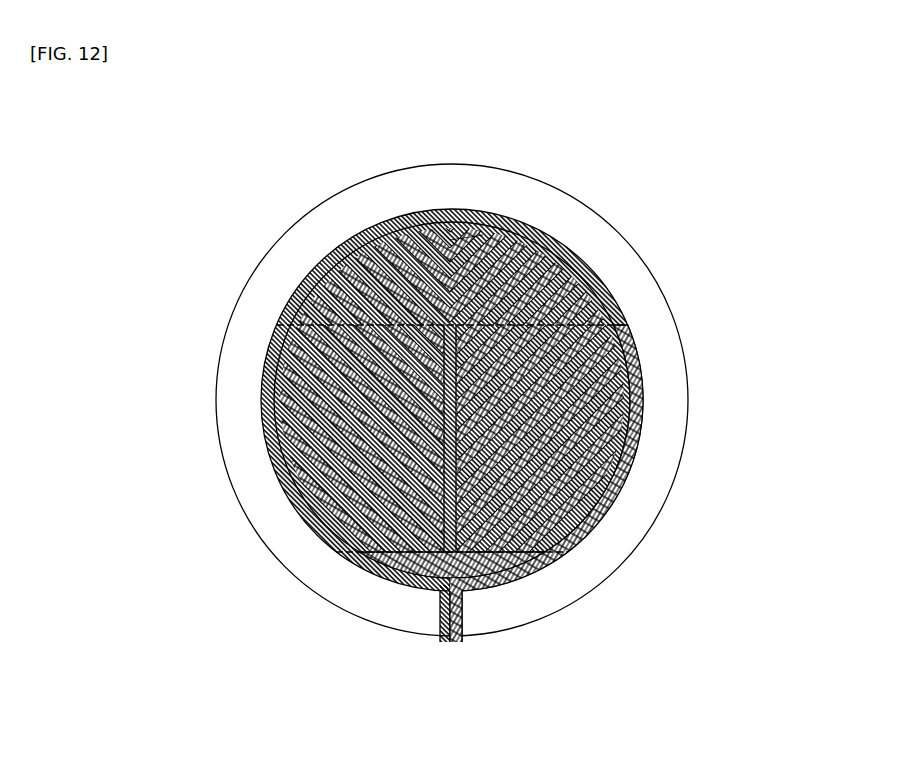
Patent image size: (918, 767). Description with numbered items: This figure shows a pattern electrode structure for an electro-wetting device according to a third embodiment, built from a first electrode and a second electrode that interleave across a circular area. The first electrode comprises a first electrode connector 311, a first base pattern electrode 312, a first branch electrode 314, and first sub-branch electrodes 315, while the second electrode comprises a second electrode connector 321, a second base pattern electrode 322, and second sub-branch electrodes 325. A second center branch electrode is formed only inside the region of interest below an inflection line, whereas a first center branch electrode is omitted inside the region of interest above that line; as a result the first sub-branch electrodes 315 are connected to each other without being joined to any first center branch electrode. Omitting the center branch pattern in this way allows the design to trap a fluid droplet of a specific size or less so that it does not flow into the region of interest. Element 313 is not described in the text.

The first electrode connector 311 is at (445, 640).
The first base pattern electrode 312 is at (317, 253).
The collecting channel 313 is at (400, 540).
The first branch electrode 314 is at (372, 250).
The first sub-branch electrode 315 is at (483, 235).
The second electrode connector 321 is at (458, 642).
The second base pattern electrode 322 is at (640, 463).
The second sub-branch electrode 325 is at (547, 427).